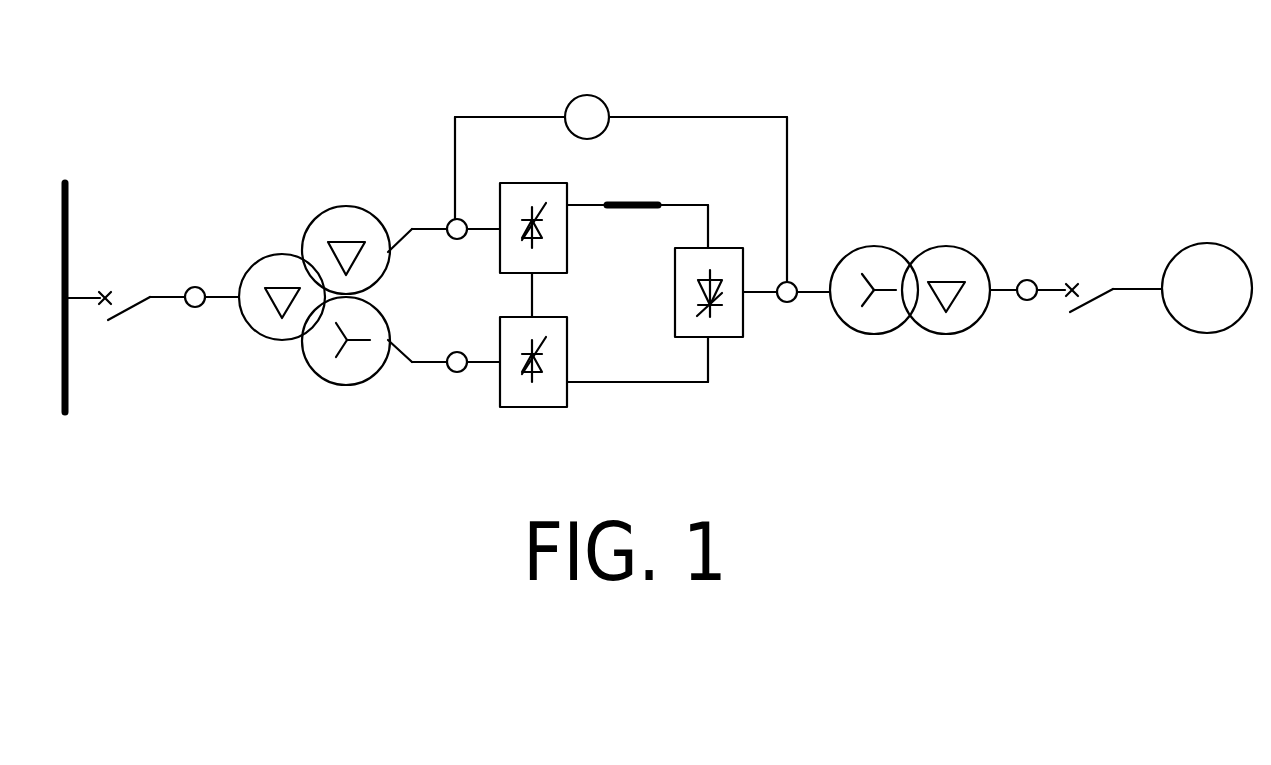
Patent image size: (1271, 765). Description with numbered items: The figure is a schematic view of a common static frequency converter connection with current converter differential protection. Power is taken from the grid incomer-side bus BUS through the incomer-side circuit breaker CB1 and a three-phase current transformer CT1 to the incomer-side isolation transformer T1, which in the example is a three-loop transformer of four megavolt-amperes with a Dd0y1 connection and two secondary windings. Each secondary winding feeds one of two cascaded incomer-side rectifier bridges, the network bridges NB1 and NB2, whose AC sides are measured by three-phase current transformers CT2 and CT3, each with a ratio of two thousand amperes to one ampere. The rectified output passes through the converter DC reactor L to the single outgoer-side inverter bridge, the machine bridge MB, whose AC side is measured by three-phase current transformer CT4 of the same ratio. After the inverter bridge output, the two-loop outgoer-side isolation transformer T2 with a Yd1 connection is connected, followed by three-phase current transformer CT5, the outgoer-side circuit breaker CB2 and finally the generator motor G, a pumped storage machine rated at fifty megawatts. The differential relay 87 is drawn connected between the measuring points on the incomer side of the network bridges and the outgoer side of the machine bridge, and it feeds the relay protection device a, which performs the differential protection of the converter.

The grid incomer-side bus BUS is at (72, 272).
The incomer-side circuit breaker CB1 is at (142, 324).
The three-phase current transformer CT1 is at (195, 322).
The incomer-side isolation transformer T1 is at (314, 314).
The three-phase current transformer CT2 is at (456, 249).
The three-phase current transformer CT3 is at (456, 381).
The incomer-side rectifier bridge NB1 is at (553, 245).
The incomer-side rectifier bridge NB2 is at (550, 381).
The converter DC reactor L is at (632, 189).
The outgoer-side inverter bridge MB is at (701, 311).
The three-phase current transformer CT4 is at (787, 312).
The differential relay 87 is at (621, 188).
The relay protection device a is at (603, 101).
The outgoer-side isolation transformer T2 is at (910, 313).
The three-phase current transformer CT5 is at (1028, 310).
The outgoer-side circuit breaker CB2 is at (1114, 314).
The generator motor G is at (1207, 288).